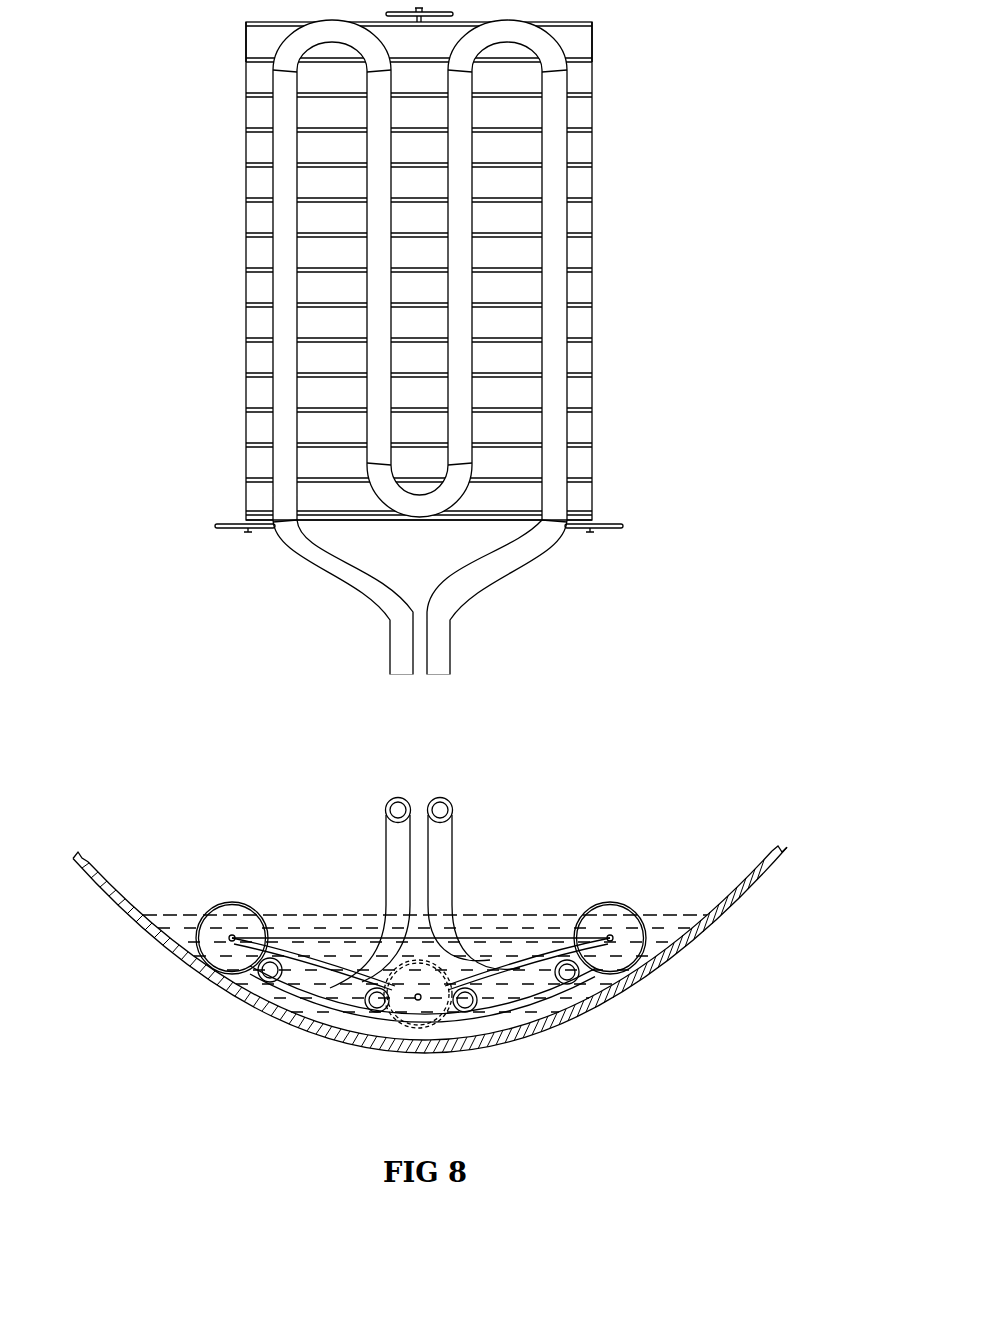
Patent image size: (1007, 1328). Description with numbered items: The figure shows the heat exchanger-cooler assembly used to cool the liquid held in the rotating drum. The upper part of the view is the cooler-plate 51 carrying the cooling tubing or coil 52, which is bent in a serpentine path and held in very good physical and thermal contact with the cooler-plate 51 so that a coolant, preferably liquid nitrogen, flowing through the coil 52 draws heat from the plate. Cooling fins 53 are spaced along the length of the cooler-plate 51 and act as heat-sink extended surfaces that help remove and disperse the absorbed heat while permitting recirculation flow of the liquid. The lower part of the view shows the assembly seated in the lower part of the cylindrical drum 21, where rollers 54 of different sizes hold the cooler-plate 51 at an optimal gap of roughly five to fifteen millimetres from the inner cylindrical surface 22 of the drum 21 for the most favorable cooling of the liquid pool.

The cylindrical drum 21 is at (756, 853).
The inner cylindrical surface 22 is at (725, 880).
The cooler-plate 51 is at (250, 46).
The cooling tubing (coil) 52 is at (527, 33).
The cooling fins 53 is at (527, 235).
The rollers 54 is at (606, 512).